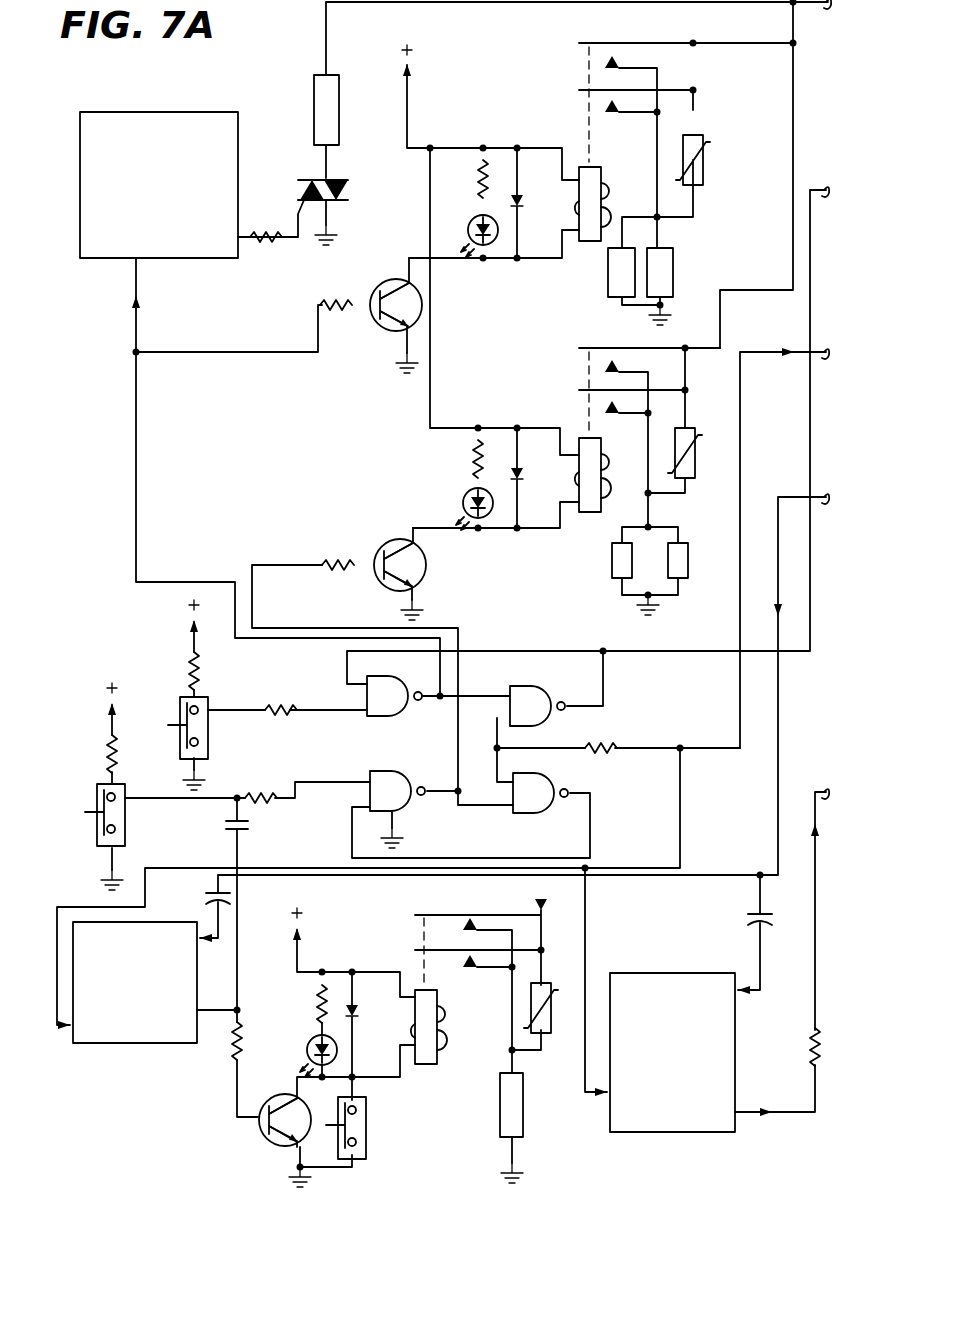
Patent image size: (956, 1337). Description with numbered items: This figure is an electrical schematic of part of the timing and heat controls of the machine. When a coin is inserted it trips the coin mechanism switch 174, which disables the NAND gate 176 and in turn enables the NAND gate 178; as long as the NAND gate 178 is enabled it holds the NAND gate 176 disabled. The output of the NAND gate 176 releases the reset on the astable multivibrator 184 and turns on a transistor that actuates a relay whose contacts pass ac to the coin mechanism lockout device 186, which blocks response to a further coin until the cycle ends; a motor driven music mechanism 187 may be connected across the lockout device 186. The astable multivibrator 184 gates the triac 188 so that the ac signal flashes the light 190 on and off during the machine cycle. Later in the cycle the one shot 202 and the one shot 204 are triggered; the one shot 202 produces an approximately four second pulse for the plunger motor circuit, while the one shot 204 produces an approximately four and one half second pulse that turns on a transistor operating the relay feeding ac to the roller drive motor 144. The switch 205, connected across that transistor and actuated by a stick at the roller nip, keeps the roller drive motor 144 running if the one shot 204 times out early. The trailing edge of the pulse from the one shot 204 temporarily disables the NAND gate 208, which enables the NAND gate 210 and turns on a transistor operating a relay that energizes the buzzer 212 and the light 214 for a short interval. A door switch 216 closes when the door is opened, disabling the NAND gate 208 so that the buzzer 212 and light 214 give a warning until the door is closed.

The astable multivibrator 184 is at (178, 112).
The light 190 is at (314, 75).
The triac 188 is at (305, 163).
The coin mechanism lockout device 186 is at (674, 258).
The motor driven music mechanism 187 is at (608, 282).
The buzzer 212 is at (612, 562).
The light 214 is at (688, 560).
The coin mechanism switch 174 is at (179, 700).
The switch 216 is at (97, 791).
The NAND gate 176 is at (378, 716).
The NAND gate 178 is at (527, 660).
The NAND gate 208 is at (415, 812).
The NAND gate 210 is at (556, 777).
The one shot 204 is at (88, 1043).
The one shot 202 is at (690, 1133).
The switch 205 is at (364, 1116).
The roller drive motor 144 is at (500, 1110).